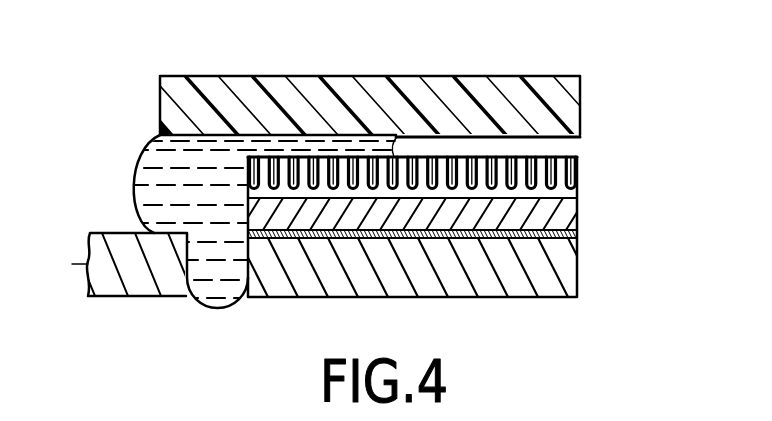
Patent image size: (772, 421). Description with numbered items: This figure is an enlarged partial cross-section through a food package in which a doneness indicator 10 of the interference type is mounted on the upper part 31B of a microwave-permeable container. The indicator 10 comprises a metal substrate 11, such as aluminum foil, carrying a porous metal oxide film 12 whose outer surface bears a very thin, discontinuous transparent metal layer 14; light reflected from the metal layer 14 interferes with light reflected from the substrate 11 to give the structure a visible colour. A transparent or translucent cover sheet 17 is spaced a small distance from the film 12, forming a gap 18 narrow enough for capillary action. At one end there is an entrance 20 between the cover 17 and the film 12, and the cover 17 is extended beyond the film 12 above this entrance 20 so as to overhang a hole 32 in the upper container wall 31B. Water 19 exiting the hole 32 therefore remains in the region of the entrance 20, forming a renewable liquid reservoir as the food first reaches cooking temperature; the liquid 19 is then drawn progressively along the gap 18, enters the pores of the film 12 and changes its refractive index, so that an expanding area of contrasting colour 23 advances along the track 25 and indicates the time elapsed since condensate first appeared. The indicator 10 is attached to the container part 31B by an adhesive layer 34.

The indicator 10 is at (160, 75).
The metal substrate 11 is at (570, 218).
The porous film 12 is at (572, 176).
The discontinuous transparent metal layer 14 is at (563, 147).
The cover sheet 17 is at (547, 90).
The gap 18 is at (570, 148).
The liquid 19 is at (160, 178).
The entrance 20 is at (250, 147).
The column of contrasting colour 23 is at (343, 135).
The track 25 is at (434, 135).
The upper part of the container 31B is at (572, 270).
The hole 32 is at (185, 263).
The adhesive layer 34 is at (568, 237).